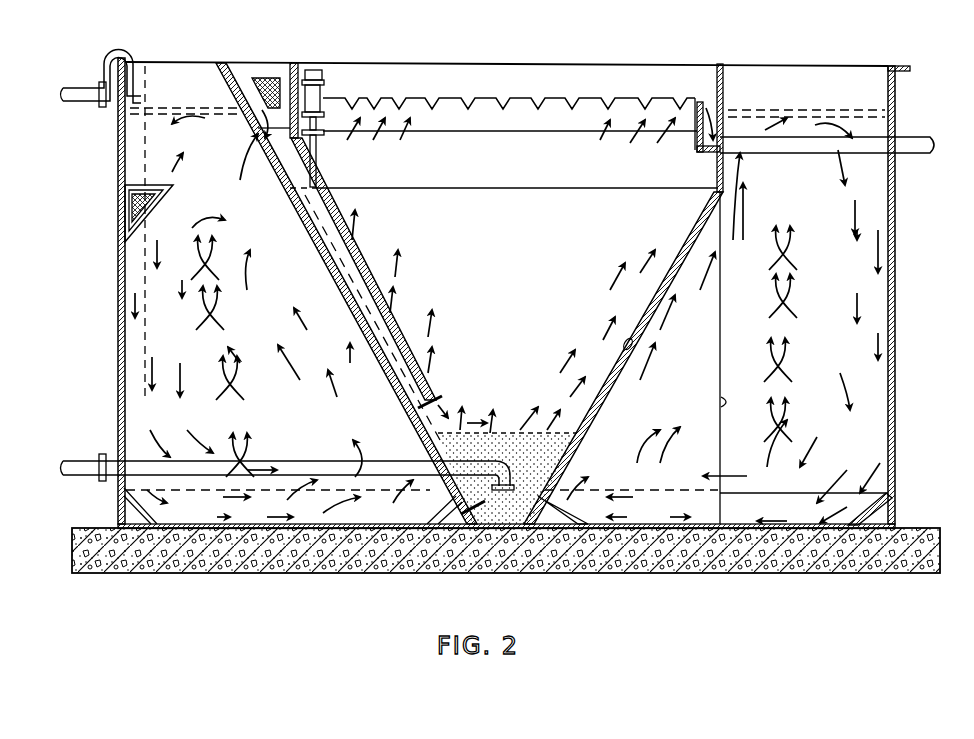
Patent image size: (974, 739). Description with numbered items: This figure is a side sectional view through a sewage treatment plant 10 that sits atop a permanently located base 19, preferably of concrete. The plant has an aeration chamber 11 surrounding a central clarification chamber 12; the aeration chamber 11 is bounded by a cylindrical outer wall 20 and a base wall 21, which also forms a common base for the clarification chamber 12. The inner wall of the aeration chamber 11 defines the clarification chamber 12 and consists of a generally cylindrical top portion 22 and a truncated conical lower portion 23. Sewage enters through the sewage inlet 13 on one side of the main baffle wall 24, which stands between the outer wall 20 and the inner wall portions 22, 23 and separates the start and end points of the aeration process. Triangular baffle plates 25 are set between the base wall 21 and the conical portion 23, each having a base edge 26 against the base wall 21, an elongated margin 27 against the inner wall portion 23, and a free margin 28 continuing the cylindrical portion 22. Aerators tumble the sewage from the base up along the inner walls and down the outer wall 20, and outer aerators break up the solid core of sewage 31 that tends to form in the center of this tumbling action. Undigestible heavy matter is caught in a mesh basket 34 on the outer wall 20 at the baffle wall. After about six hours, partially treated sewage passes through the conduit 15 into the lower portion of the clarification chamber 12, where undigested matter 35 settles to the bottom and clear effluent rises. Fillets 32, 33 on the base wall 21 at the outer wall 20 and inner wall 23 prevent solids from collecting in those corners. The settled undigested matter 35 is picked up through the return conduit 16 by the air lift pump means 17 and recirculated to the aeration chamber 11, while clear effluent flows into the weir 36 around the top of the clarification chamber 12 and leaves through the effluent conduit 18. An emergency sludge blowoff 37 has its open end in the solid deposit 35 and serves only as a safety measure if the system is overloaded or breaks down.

The sewage treatment plant 10 is at (787, 50).
The aeration chamber 11 is at (838, 281).
The clarification chamber 12 is at (517, 254).
The sewage inlet 13 is at (88, 86).
The conduit 15 is at (290, 172).
The conduit 16 is at (393, 353).
The pump means 17 is at (321, 96).
The conduit 18 is at (914, 136).
The base 19 is at (462, 530).
The outer wall 20 is at (117, 298).
The base wall 21 is at (366, 530).
The cylindrical top portion 22 is at (724, 100).
The truncated conical lower portion 23 is at (623, 348).
The main baffle wall 24 is at (230, 350).
The baffle plates 25 is at (698, 381).
The base edge 26 is at (697, 503).
The elongated margin 27 is at (641, 342).
The free margin 28 is at (718, 402).
The core of sewage 31 is at (750, 325).
The fillet 32 is at (878, 517).
The fillet 33 is at (553, 521).
The mesh basket 34 is at (130, 206).
The undigested matter 35 is at (540, 468).
The weir 36 is at (557, 106).
The emergency sludge blowoff 37 is at (74, 456).